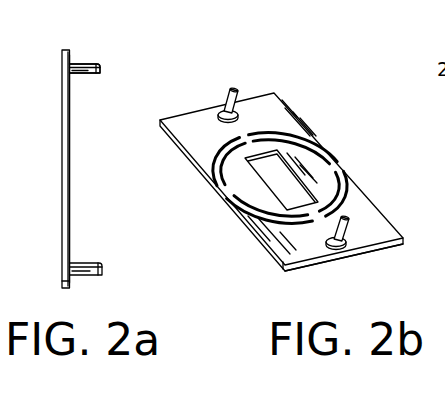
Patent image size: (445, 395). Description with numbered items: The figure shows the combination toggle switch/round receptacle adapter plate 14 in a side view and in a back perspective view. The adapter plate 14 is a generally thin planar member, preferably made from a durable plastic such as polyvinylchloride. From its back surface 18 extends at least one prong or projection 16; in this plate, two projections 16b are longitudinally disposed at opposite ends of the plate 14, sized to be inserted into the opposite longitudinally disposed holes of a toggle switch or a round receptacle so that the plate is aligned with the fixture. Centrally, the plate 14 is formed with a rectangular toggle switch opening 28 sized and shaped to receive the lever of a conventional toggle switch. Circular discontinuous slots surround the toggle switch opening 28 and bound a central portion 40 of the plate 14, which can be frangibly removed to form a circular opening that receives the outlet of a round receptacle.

In FIG. 2A, the combination toggle switch/round receptacle adapter plate 14 is at (62, 182).
In FIG. 2B, the combination toggle switch/round receptacle adapter plate 14 is at (280, 97).
In FIG. 2A, the prong or projection 16 is at (90, 63).
In FIG. 2A, the projection 16b is at (85, 68).
In FIG. 2B, the projection 16b is at (238, 87).
In FIG. 2A, the back surface 18 is at (70, 97).
In FIG. 2B, the back surface 18 is at (380, 228).
In FIG. 2B, the toggle switch opening 28 is at (278, 188).
In FIG. 2B, the central portion 40 is at (308, 158).